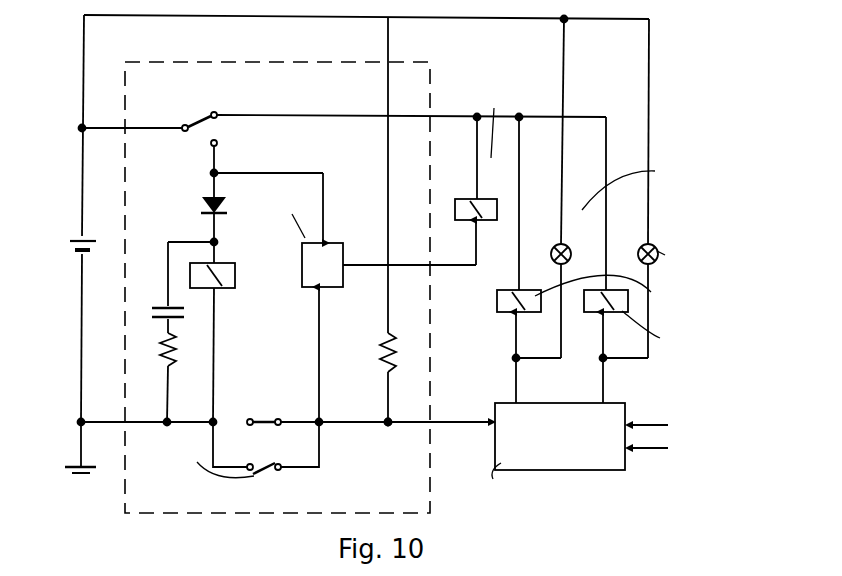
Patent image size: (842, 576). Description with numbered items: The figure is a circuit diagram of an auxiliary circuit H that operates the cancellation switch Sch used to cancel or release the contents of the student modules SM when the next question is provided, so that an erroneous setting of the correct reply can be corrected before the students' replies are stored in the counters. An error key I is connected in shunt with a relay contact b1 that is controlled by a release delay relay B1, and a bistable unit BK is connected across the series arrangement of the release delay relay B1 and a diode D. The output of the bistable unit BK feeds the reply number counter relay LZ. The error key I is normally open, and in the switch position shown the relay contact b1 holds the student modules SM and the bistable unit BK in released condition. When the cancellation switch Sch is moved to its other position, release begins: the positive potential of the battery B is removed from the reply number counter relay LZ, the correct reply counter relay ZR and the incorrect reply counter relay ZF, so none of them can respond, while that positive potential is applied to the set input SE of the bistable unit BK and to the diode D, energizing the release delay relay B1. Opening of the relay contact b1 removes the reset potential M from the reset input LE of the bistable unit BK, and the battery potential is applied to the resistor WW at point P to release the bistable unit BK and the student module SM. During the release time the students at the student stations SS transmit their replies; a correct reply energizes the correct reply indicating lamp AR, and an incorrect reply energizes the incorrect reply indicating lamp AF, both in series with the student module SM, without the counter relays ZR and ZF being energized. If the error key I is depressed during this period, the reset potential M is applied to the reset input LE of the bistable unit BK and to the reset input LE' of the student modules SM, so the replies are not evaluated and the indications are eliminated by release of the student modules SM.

The cancellation switch Sch is at (200, 119).
The diode D is at (221, 205).
The battery B is at (67, 251).
The release delay relay B1 is at (218, 290).
The bistable unit BK is at (365, 234).
The set input SE is at (324, 227).
The reset input LE is at (334, 354).
The resistor WW is at (393, 358).
The reply number counter relay LZ is at (487, 198).
The correct reply indicating lamp AR is at (566, 246).
The incorrect reply indicating lamp AF is at (658, 246).
The correct reply counter relay ZR is at (530, 314).
The incorrect reply counter relay ZF is at (616, 314).
The student modules SM is at (558, 450).
The student stations SS is at (660, 437).
The reset input of the student modules LE' is at (459, 439).
The junction point P is at (386, 440).
The relay contact b1 is at (266, 418).
The error key I is at (266, 465).
The auxiliary circuit H is at (359, 497).
The reset potential M is at (88, 481).